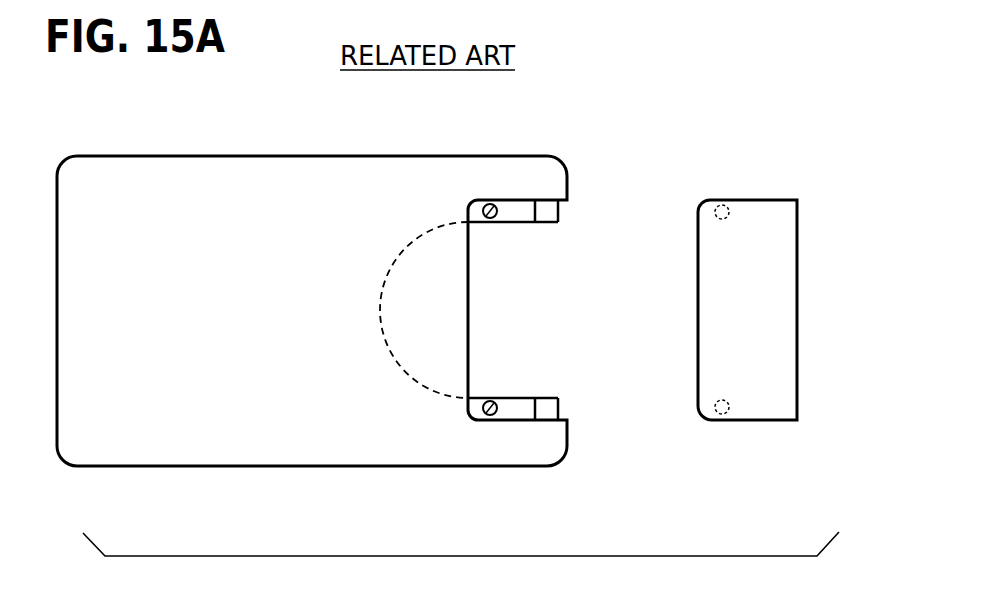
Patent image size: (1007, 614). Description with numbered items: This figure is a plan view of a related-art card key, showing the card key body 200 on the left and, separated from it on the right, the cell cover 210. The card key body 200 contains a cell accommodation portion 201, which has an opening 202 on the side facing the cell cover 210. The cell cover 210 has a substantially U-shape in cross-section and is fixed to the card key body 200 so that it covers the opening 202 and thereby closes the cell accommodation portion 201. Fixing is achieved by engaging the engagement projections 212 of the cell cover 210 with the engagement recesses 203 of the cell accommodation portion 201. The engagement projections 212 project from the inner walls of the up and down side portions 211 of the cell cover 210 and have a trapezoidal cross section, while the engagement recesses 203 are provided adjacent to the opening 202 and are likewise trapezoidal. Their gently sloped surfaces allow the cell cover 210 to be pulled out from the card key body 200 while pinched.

The card key body 200 is at (395, 154).
The cell accommodation portion 201 is at (385, 307).
The opening 202 is at (469, 308).
The engagement recesses 203 is at (494, 218).
The cell cover 210 is at (803, 353).
The up and down side portions 211 is at (750, 210).
The engagement projections 212 is at (713, 218).